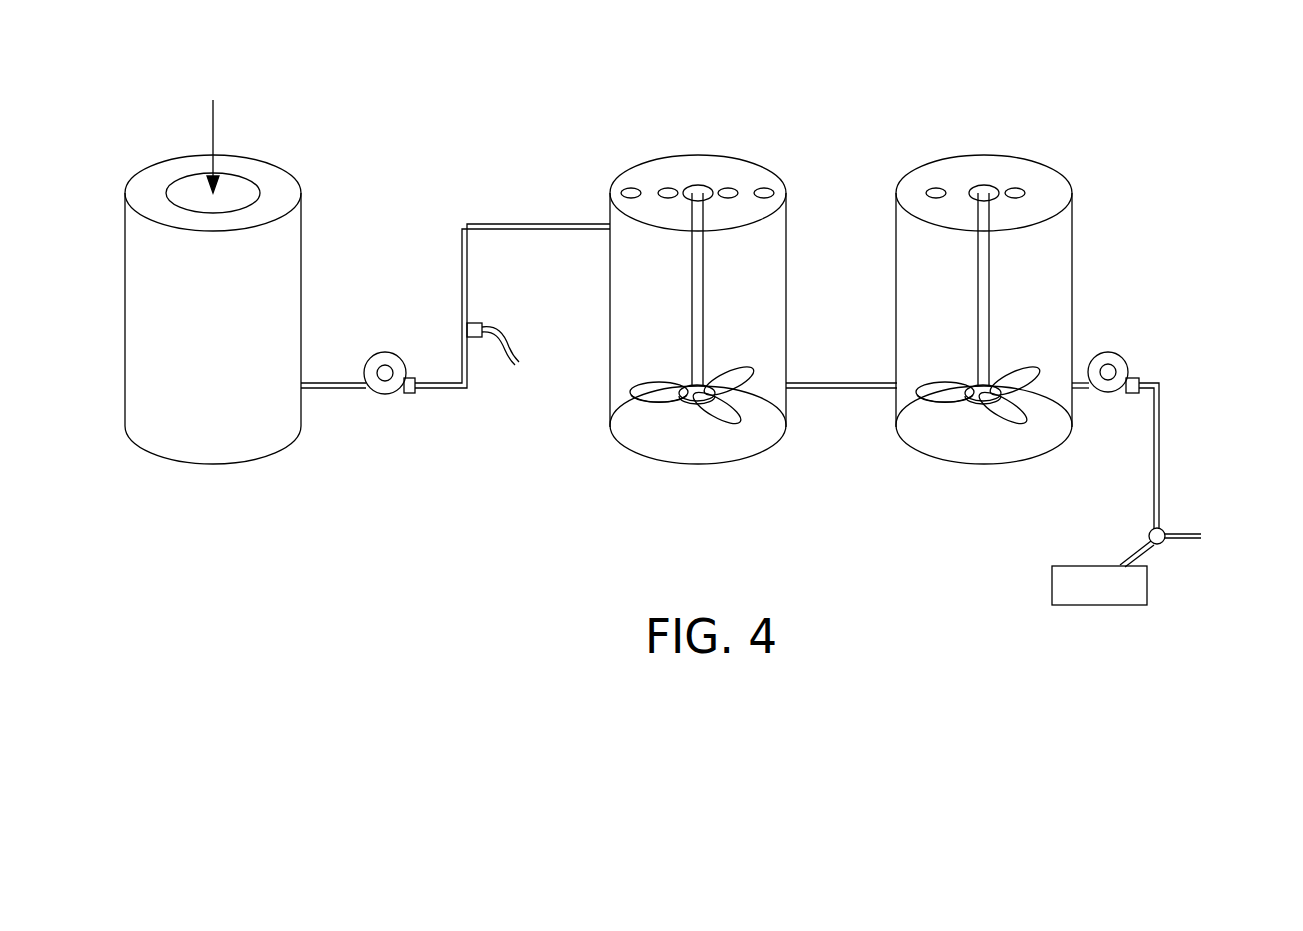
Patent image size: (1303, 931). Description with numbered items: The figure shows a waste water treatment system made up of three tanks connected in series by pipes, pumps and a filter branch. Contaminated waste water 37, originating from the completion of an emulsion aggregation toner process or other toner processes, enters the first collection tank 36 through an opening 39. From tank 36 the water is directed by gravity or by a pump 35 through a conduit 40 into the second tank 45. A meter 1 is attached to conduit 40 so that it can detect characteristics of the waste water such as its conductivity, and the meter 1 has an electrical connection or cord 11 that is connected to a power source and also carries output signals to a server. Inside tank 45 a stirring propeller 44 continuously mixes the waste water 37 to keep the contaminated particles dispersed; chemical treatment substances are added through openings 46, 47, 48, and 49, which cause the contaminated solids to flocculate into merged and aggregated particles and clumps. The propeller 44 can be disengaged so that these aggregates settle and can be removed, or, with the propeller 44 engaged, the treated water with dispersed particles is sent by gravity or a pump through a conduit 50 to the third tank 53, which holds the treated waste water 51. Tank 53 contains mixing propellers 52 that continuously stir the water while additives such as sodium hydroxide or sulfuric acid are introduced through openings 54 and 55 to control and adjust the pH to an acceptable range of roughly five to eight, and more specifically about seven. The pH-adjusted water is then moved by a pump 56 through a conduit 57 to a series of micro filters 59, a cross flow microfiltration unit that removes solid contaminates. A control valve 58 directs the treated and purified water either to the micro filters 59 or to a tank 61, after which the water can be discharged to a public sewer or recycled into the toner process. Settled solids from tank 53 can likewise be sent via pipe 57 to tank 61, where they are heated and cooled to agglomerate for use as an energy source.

The meter 1 is at (478, 340).
The electrical connection or cord 11 is at (505, 343).
The pump 35 is at (383, 352).
The waste water container or tank 36 is at (212, 343).
The contaminated waste water 37 is at (213, 108).
The opening 39 is at (247, 194).
The conduit 40 is at (462, 288).
The stirring propeller 44 is at (650, 385).
The container or tank 45 is at (683, 285).
The opening 46 is at (668, 174).
The opening 47 is at (631, 174).
The opening 48 is at (728, 174).
The opening 49 is at (764, 174).
The conduit or pipe 50 is at (838, 391).
The treated waste water 51 is at (1058, 308).
The mixing propellers 52 is at (930, 385).
The container 53 is at (966, 285).
The opening 54 is at (936, 174).
The opening 55 is at (1015, 174).
The pump 56 is at (1120, 352).
The conduit or pipe 57 is at (1153, 487).
The control valve 58 is at (1162, 546).
The micro filters 59 is at (1232, 518).
The tank 61 is at (1052, 586).